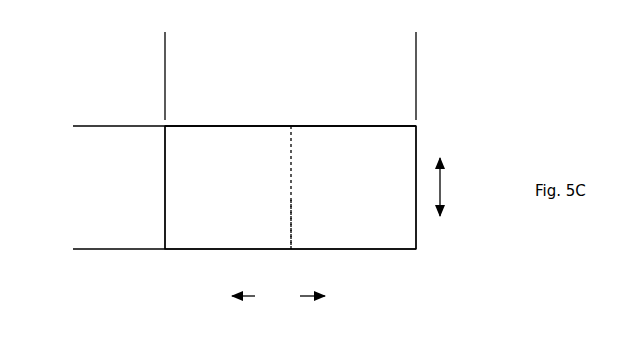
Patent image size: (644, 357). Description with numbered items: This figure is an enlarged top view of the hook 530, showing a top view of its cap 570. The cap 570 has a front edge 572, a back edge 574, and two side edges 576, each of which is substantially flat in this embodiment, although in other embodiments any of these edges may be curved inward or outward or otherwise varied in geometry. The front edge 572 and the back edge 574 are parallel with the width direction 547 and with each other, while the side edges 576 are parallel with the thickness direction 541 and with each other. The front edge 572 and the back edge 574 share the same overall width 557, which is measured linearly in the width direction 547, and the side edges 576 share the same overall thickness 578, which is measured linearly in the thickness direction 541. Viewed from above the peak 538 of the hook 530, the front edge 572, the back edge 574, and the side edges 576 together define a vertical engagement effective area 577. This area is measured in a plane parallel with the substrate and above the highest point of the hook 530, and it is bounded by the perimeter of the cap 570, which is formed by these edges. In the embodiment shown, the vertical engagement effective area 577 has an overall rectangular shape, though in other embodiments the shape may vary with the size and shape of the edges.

The hook 530 is at (430, 121).
The peak 538 is at (289, 218).
The thickness direction 541 is at (444, 186).
The width direction 547 is at (278, 297).
The overall width 557 is at (414, 40).
The cap 570 is at (243, 190).
The front edge 572 is at (369, 254).
The back edge 574 is at (319, 113).
The side edges 576 is at (419, 146).
The vertical engagement effective area 577 is at (304, 176).
The overall thickness 578 is at (78, 128).